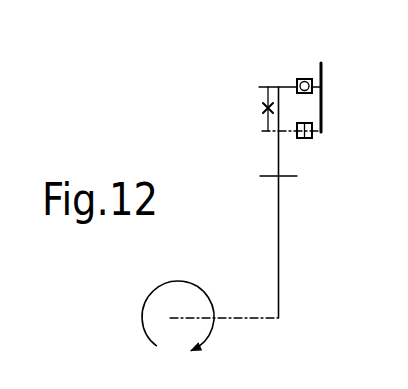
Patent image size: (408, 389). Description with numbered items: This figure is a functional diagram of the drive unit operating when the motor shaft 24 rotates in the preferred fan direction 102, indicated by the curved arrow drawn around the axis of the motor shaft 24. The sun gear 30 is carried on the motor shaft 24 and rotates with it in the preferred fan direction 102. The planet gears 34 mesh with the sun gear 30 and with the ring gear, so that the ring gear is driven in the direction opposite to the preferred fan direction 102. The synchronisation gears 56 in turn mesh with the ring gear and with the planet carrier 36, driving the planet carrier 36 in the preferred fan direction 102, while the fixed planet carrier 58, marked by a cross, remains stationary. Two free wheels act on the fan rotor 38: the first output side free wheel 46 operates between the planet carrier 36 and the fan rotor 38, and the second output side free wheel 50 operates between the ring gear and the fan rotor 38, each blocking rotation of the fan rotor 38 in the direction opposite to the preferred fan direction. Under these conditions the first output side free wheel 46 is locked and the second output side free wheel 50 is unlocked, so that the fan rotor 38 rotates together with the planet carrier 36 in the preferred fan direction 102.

The motor shaft 24 is at (248, 318).
The sun gear 30 is at (279, 230).
The planet gears 34 is at (279, 162).
The planet carrier 36 is at (265, 131).
The fan rotor 38 is at (323, 103).
The first output side free wheel 46 is at (312, 134).
The second output side free wheel 50 is at (305, 79).
The synchronisation gears 56 is at (265, 128).
The fixed planet carrier 58 is at (262, 105).
The preferred fan direction 102 is at (207, 292).